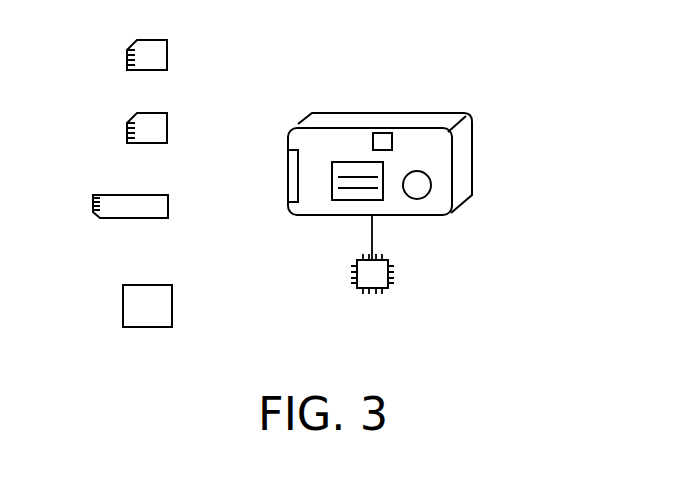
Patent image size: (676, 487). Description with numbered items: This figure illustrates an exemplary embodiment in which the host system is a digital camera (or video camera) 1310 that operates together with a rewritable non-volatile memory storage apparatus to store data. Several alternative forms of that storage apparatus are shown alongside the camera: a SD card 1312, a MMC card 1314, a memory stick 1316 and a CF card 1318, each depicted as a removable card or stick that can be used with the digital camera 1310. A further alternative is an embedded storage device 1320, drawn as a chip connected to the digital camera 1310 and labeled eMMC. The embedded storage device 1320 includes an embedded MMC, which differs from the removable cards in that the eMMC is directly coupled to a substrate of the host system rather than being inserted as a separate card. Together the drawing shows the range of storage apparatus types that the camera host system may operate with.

The digital camera 1310 is at (472, 150).
The SD card 1312 is at (167, 45).
The MMC card 1314 is at (167, 118).
The memory stick 1316 is at (168, 207).
The CF card 1318 is at (172, 298).
The embedded storage device 1320 is at (392, 277).